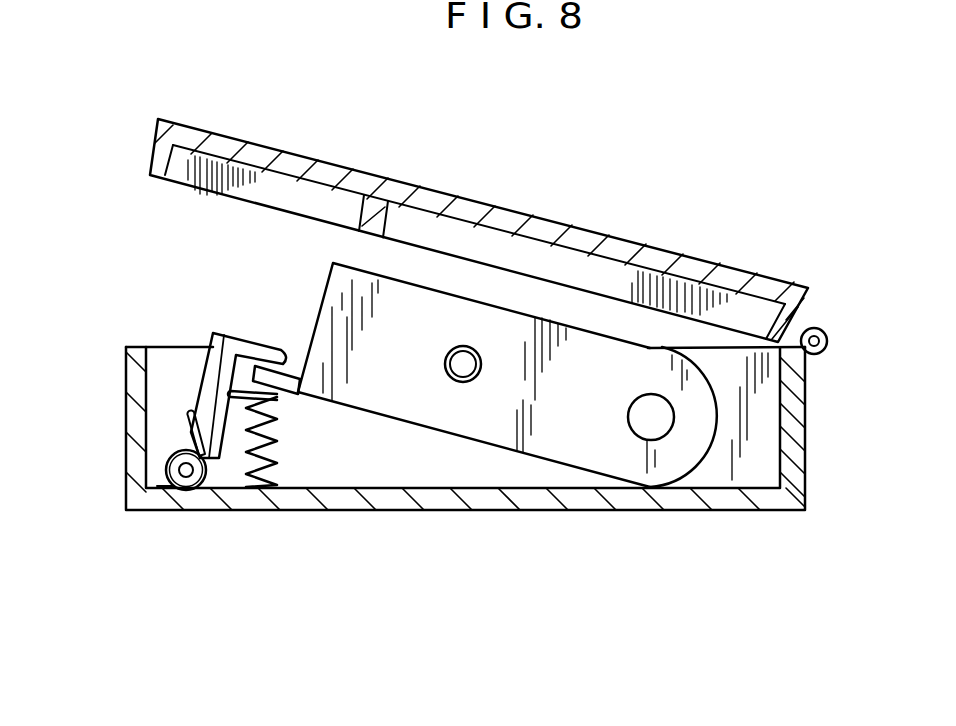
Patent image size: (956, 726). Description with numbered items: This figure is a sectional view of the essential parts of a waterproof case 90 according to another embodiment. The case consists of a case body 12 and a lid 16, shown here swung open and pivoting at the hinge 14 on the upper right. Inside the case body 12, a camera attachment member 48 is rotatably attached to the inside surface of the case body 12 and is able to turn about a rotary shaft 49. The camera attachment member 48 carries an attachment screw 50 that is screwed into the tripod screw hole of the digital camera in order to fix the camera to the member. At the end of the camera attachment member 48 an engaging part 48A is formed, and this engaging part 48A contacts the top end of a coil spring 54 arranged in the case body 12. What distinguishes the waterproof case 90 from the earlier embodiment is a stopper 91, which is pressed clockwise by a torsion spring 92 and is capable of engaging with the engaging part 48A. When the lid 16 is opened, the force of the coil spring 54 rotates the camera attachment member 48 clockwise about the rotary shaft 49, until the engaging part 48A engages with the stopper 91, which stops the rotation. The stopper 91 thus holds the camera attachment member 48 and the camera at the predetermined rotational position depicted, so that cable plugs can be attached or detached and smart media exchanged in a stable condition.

The waterproof case 90 is at (718, 133).
The lid 16 is at (277, 147).
The case body 12 is at (125, 400).
The hinge pin 14 is at (829, 341).
The camera attachment member 48 is at (490, 452).
The engaging part 48A is at (278, 383).
The rotary shaft 49 is at (643, 422).
The attachment screw 50 is at (446, 378).
The coil spring 54 is at (245, 447).
The stopper 91 is at (213, 333).
The torsion spring 92 is at (195, 413).